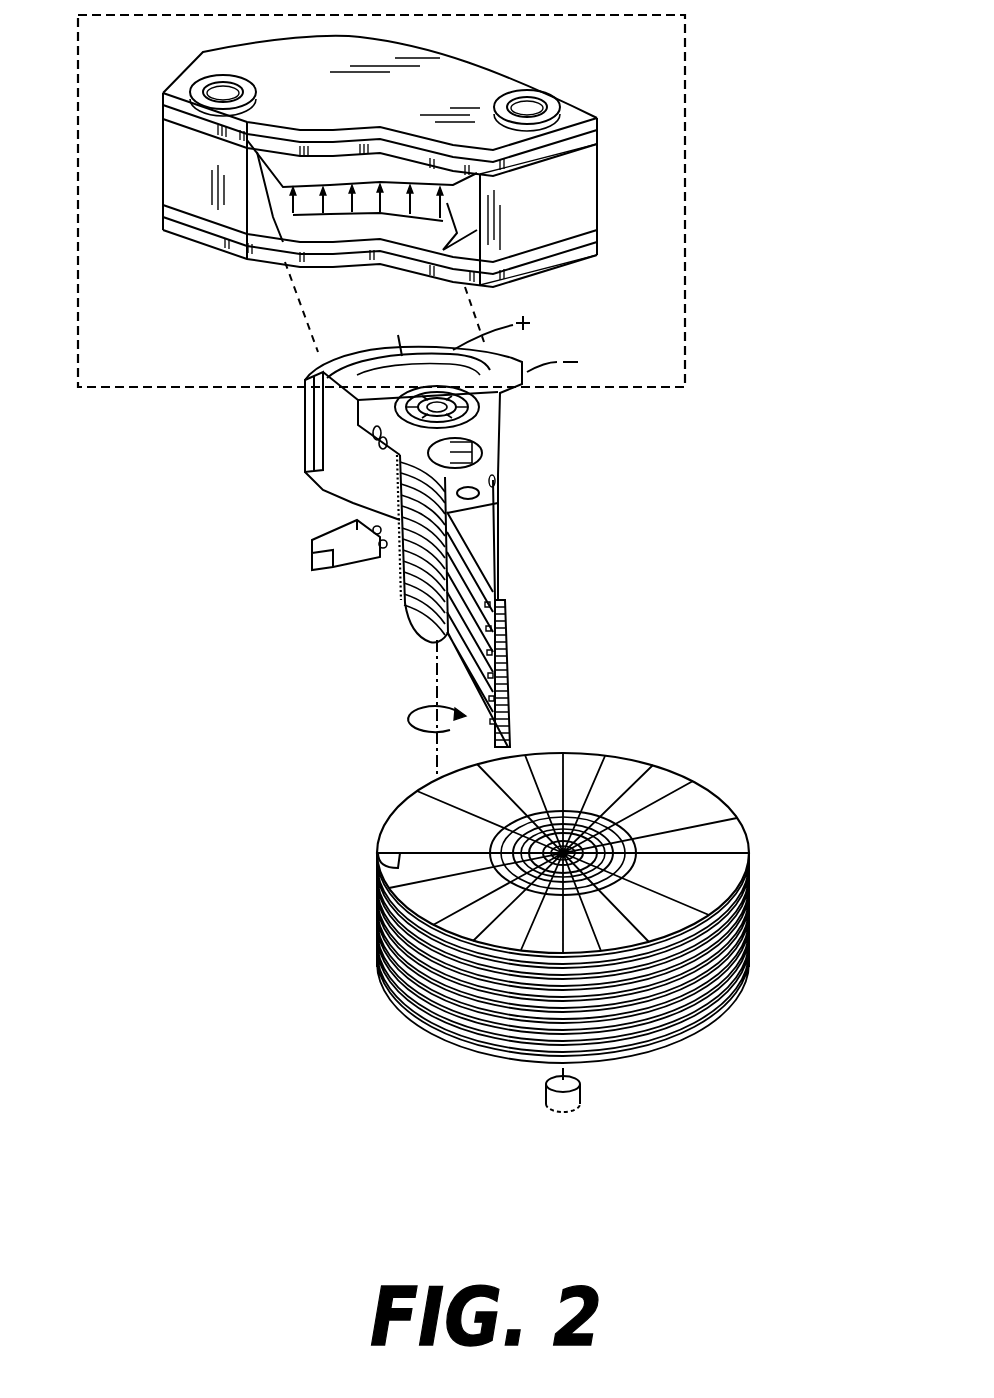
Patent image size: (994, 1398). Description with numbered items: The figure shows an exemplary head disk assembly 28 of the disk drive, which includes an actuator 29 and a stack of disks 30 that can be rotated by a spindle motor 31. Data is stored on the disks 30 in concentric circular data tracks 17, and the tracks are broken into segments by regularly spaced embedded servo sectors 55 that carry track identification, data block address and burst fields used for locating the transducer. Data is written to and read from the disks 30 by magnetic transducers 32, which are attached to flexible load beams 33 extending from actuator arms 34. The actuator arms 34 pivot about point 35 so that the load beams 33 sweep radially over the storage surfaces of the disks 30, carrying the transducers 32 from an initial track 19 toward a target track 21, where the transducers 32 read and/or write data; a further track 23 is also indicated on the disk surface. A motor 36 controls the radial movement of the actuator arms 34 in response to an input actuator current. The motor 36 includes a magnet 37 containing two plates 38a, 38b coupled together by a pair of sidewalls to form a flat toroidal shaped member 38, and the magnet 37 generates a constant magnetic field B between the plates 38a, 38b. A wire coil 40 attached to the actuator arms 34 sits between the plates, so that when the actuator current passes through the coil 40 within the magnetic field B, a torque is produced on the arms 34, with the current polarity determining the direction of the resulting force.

The concentric circular data tracks 17 is at (590, 810).
The initial track 19 is at (650, 815).
The target track 21 is at (657, 835).
The data track / zone 23 is at (607, 813).
The head disk assembly 28 is at (648, 478).
The actuator 29 is at (148, 463).
The disks 30 is at (593, 1033).
The spindle motor 31 is at (545, 1094).
The magnetic transducers 32 is at (507, 602).
The flexible load beams 33 is at (497, 547).
The actuator arms 34 is at (497, 467).
The pivot point 35 is at (467, 408).
The motor 36 is at (687, 187).
The magnet 37 is at (480, 47).
The flat toroidal shaped member 38 is at (580, 188).
The plate 38a is at (336, 160).
The plate 38b is at (332, 235).
The wire coil 40 is at (347, 367).
The embedded servo sectors 55 is at (375, 861).
The magnetic field B is at (283, 185).